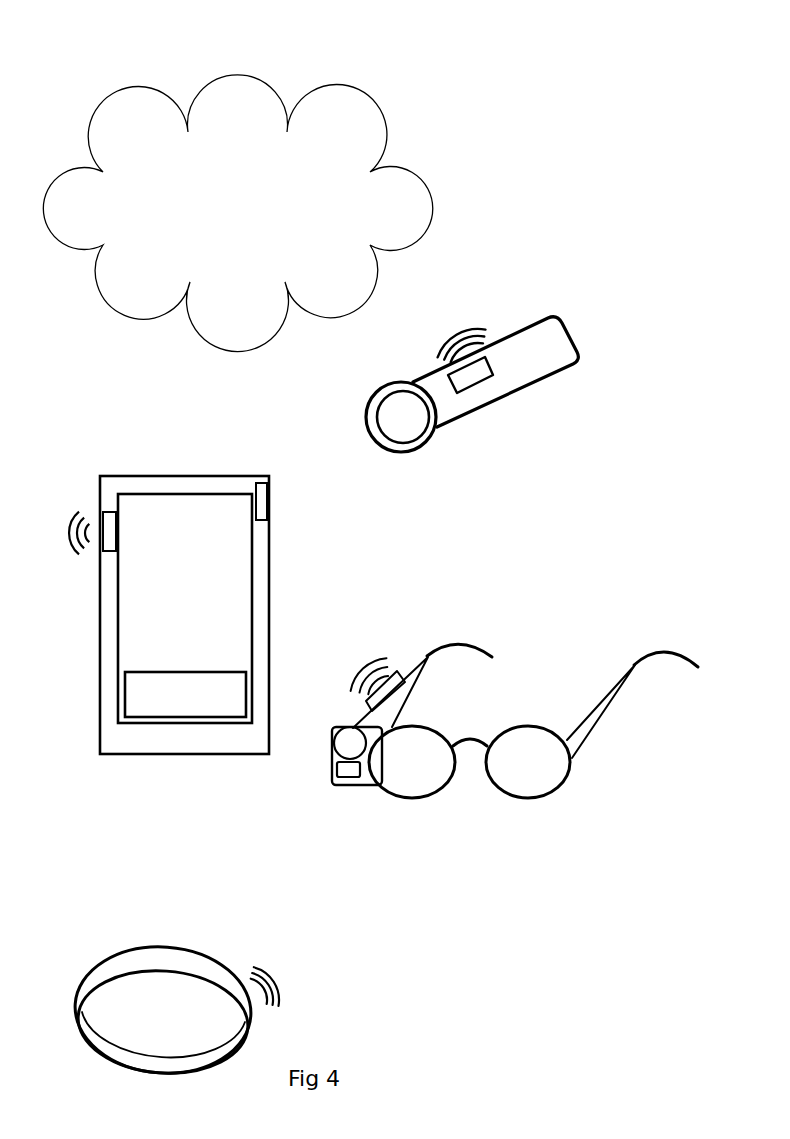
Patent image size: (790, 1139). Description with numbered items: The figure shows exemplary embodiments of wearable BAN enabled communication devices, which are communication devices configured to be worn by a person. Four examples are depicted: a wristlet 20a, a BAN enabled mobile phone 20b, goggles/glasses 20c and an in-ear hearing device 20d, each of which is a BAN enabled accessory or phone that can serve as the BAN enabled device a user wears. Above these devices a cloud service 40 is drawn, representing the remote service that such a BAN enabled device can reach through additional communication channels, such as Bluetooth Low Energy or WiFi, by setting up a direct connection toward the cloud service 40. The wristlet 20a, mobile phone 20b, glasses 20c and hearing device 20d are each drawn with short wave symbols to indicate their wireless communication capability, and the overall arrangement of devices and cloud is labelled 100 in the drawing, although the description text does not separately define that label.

The cloud service 40 is at (252, 110).
The wristlet 20a is at (148, 960).
The BAN enabled mobile phone 20b is at (188, 475).
The goggles/glasses 20c is at (437, 757).
The in-ear hearing device 20d is at (527, 328).
The system 100 is at (567, 1003).